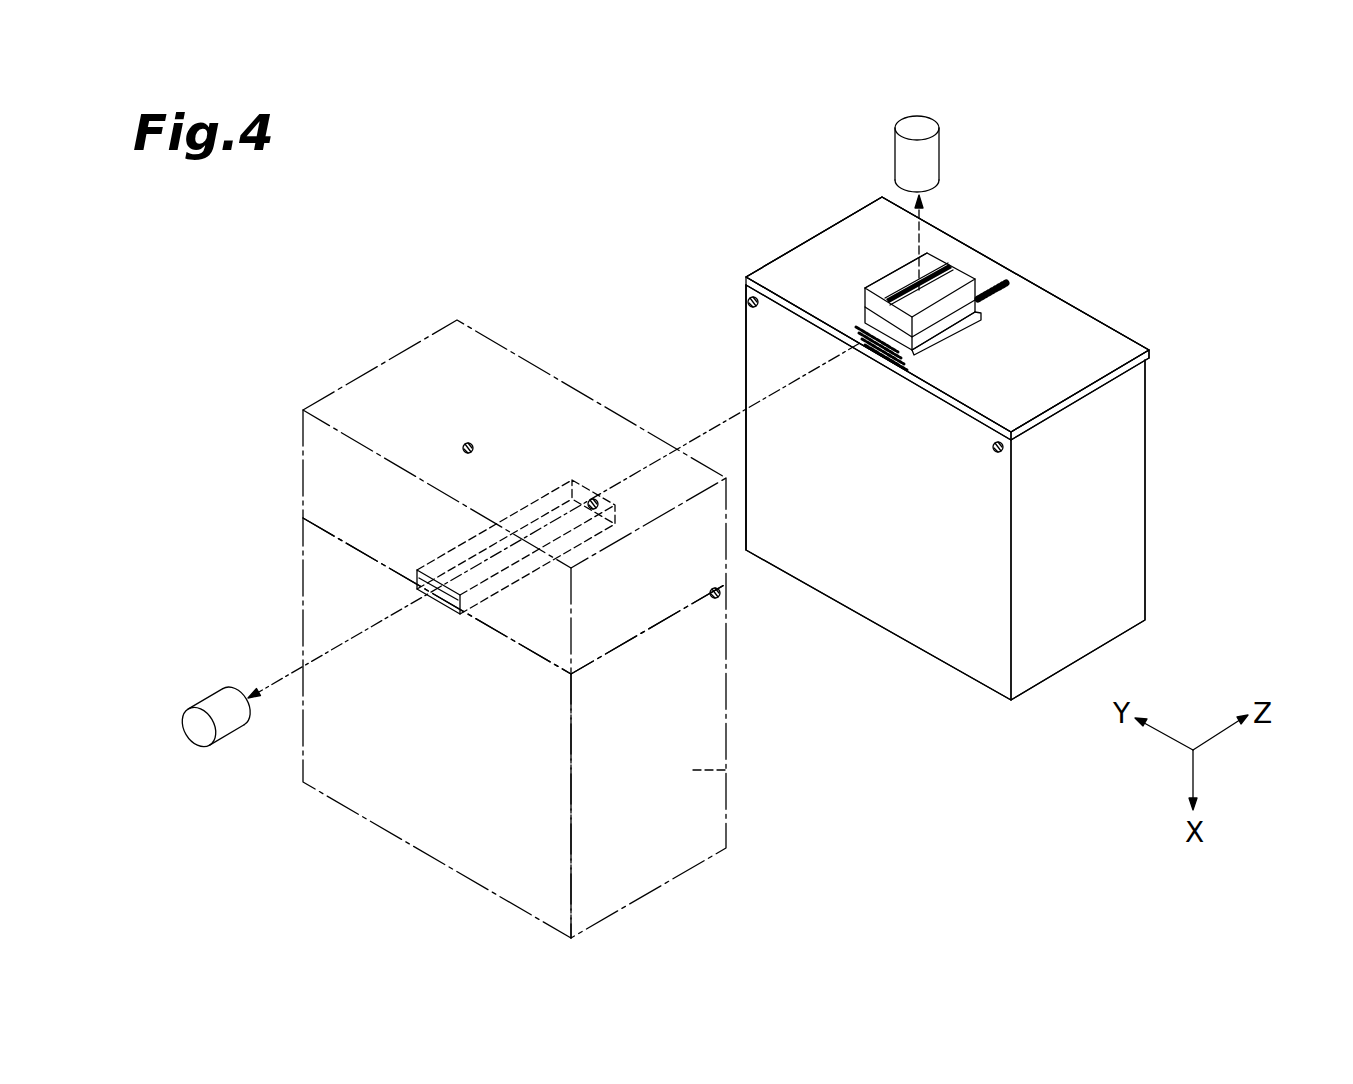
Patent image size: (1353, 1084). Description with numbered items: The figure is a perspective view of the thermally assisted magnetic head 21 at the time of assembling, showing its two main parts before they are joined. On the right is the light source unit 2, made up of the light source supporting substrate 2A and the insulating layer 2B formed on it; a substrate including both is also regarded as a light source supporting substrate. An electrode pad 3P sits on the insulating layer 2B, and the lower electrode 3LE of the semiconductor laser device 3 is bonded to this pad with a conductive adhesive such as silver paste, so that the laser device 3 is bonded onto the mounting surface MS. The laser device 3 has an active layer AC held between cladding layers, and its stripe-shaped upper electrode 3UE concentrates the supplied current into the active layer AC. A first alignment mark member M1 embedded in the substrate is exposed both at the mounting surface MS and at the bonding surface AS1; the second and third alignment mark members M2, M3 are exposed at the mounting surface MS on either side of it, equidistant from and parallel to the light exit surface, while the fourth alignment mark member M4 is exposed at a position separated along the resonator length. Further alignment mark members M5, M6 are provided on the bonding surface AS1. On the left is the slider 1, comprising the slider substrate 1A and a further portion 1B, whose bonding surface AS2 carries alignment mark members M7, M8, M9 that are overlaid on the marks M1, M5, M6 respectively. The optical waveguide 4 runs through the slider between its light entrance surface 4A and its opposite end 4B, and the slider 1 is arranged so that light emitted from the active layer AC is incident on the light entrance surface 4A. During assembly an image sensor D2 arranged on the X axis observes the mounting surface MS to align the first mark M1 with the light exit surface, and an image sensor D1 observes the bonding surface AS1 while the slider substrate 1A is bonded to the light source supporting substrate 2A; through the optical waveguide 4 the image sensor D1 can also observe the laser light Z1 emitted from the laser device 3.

The thermally assisted magnetic head 21 is at (540, 250).
The slider 1 is at (814, 623).
The slider substrate 1A is at (708, 738).
The upper portion of first holding member 1B is at (707, 558).
The bonding surface of slider substrate AS2 is at (727, 770).
The optical waveguide 4 is at (528, 574).
The light entrance surface 4A is at (590, 492).
The opening of hole 4B is at (420, 568).
The alignment mark member M7 is at (596, 514).
The alignment mark member M8 is at (462, 447).
The alignment mark member M9 is at (712, 600).
The laser light Z1 is at (715, 423).
The image sensor D1 is at (215, 703).
The second holding member 2 is at (1228, 345).
The light source supporting substrate 2A is at (1123, 510).
The insulating layer 2B is at (1150, 366).
The mounting surface MS is at (823, 249).
The bonding surface AS1 is at (777, 363).
The alignment mark member M5 is at (750, 300).
The alignment mark member M6 is at (993, 452).
The semiconductor laser device 3 is at (960, 273).
The upper electrode 3UE is at (933, 267).
The lower electrode 3LE is at (978, 324).
The electrode pad 3P is at (957, 348).
The active layer AC is at (866, 312).
The first alignment mark member M1 is at (880, 352).
The second alignment mark member M2 is at (858, 340).
The third alignment mark member M3 is at (888, 358).
The fourth alignment mark member M4 is at (1003, 279).
The image sensor D2 is at (929, 158).